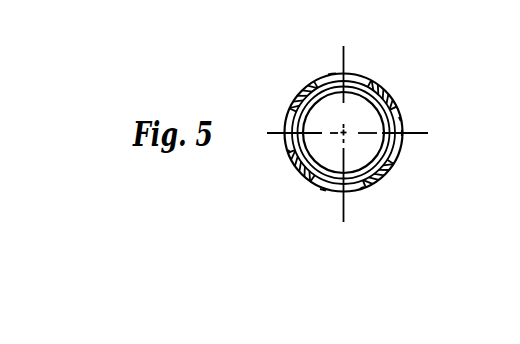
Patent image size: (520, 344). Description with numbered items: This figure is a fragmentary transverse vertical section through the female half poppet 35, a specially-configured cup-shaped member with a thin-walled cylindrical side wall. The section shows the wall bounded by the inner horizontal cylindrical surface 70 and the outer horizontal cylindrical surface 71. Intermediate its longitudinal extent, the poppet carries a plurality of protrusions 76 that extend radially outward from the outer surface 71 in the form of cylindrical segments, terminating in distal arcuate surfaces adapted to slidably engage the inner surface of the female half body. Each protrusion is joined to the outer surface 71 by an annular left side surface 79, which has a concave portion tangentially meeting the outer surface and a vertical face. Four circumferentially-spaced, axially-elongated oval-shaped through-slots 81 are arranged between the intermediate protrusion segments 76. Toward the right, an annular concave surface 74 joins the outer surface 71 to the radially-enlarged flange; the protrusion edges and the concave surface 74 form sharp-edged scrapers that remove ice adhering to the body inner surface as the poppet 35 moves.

The female half poppet 35 is at (373, 109).
The inner horizontal cylindrical surface 70 is at (368, 122).
The outer horizontal cylindrical surface 71 is at (438, 124).
The annular concave surface 74 is at (294, 212).
The protrusions 76 is at (346, 137).
The left side surface 79 is at (344, 132).
The through-slots 81 is at (349, 130).